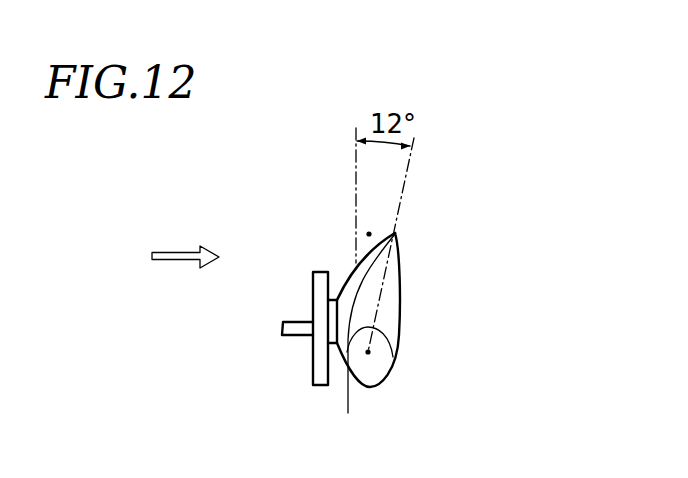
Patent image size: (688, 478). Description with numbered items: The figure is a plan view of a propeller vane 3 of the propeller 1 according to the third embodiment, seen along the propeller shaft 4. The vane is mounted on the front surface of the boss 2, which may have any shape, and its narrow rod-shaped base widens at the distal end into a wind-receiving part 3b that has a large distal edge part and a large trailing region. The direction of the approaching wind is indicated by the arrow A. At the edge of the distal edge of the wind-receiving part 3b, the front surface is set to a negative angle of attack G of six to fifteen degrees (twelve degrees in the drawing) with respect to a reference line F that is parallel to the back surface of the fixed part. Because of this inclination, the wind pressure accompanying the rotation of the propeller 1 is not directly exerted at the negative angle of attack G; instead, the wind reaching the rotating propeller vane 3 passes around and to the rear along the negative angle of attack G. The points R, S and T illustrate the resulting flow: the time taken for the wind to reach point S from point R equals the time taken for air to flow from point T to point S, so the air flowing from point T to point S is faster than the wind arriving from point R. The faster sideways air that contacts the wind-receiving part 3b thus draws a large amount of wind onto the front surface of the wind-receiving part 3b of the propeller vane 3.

The propeller 1 is at (434, 317).
The boss 2 is at (312, 367).
The propeller vane 3 is at (381, 380).
The wind-receiving part 3b is at (361, 339).
The propeller shaft 4 is at (294, 321).
The airflow direction A is at (172, 257).
The reference line F is at (355, 152).
The negative angle of attack G is at (410, 162).
The point R is at (367, 234).
The point S is at (394, 234).
The point T is at (368, 352).